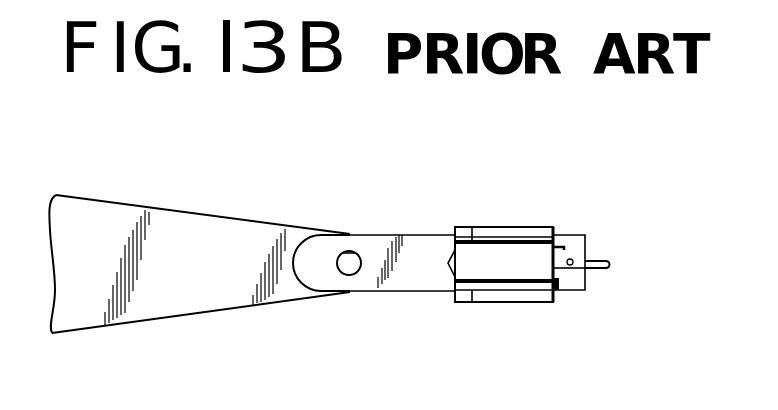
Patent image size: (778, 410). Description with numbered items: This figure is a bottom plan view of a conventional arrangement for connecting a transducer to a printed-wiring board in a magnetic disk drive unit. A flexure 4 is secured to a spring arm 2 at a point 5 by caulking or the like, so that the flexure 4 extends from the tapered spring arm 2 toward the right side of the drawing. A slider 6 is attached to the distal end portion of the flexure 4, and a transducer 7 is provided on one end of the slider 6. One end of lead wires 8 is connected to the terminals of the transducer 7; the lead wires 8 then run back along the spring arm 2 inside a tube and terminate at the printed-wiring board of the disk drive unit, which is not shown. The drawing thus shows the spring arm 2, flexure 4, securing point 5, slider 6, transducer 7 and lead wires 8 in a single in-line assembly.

The spring arm 2 is at (143, 210).
The flexure 4 is at (395, 235).
The point 5 is at (350, 266).
The slider 6 is at (507, 254).
The transducer 7 is at (560, 284).
The lead wires 8 is at (611, 262).